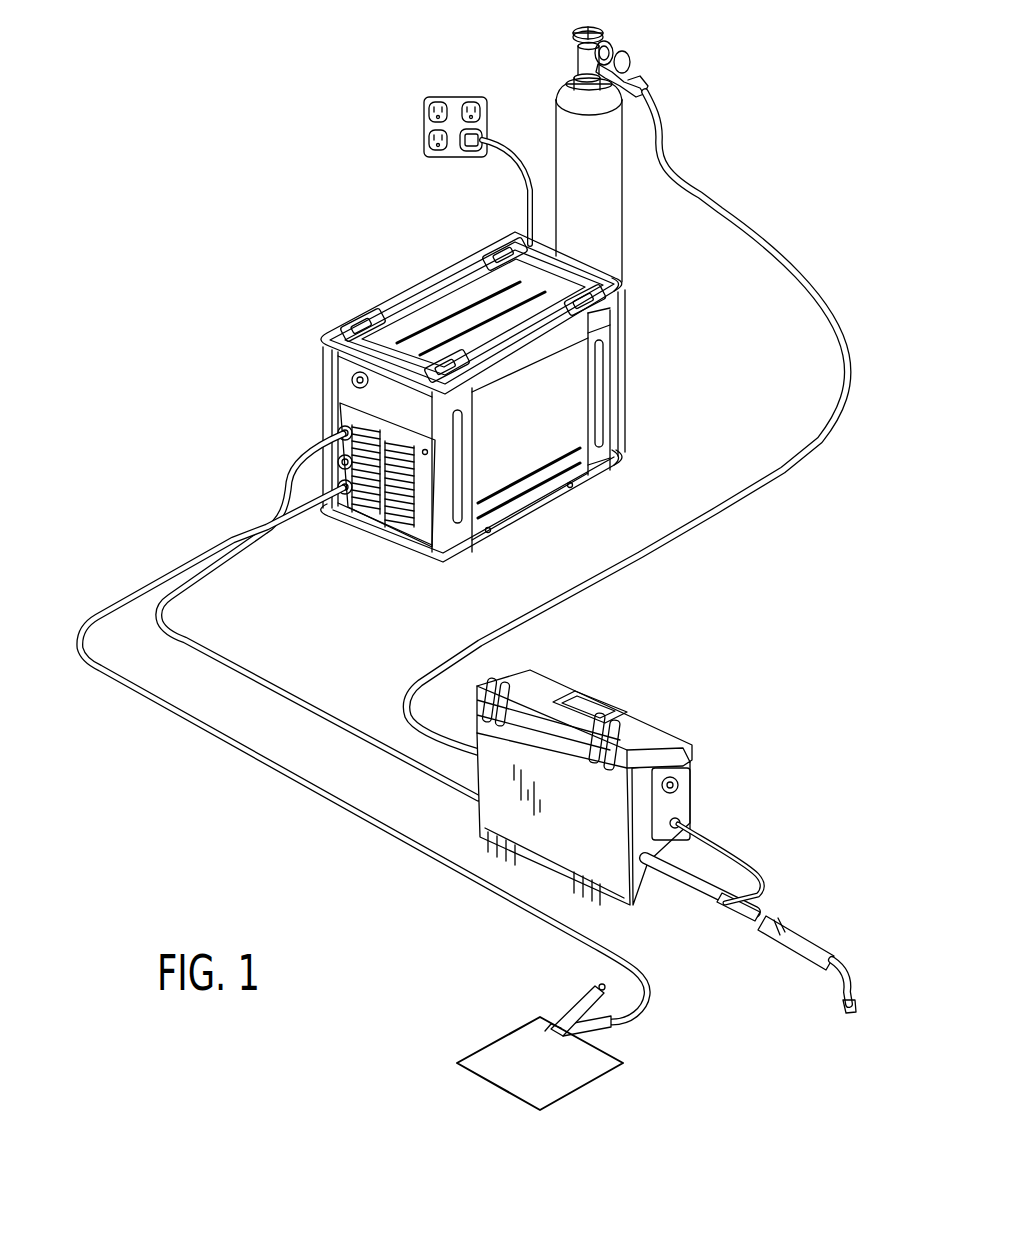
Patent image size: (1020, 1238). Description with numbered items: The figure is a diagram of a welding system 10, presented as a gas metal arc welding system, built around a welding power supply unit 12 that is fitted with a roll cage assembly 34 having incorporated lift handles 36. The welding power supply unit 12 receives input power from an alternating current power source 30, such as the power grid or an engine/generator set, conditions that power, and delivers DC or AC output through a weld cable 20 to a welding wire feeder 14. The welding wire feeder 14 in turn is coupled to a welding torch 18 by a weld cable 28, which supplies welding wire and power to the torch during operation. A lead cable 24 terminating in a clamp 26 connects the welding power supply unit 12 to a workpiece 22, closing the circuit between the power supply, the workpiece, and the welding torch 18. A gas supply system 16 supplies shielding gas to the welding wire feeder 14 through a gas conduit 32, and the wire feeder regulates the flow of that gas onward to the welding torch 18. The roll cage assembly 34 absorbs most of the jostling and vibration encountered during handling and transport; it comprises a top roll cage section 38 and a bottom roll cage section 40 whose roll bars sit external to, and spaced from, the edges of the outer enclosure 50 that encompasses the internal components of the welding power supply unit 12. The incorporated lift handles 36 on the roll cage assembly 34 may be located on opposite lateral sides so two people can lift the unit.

The welding system 10 is at (297, 236).
The welding power supply unit 12 is at (477, 382).
The welding wire feeder 14 is at (648, 663).
The gas supply system 16 is at (614, 192).
The welding torch 18 is at (797, 940).
The weld cable 20 is at (325, 707).
The workpiece 22 is at (557, 1073).
The lead cable 24 is at (106, 612).
The clamp 26 is at (583, 990).
The weld cable 28 is at (703, 893).
The alternating current power source 30 is at (421, 128).
The gas conduit 32 is at (760, 488).
The roll cage assembly 34 is at (645, 284).
The incorporated lift handles 36 is at (467, 283).
The top roll cage section 38 is at (303, 338).
The bottom roll cage section 40 is at (480, 562).
The outer enclosure 50 is at (618, 388).